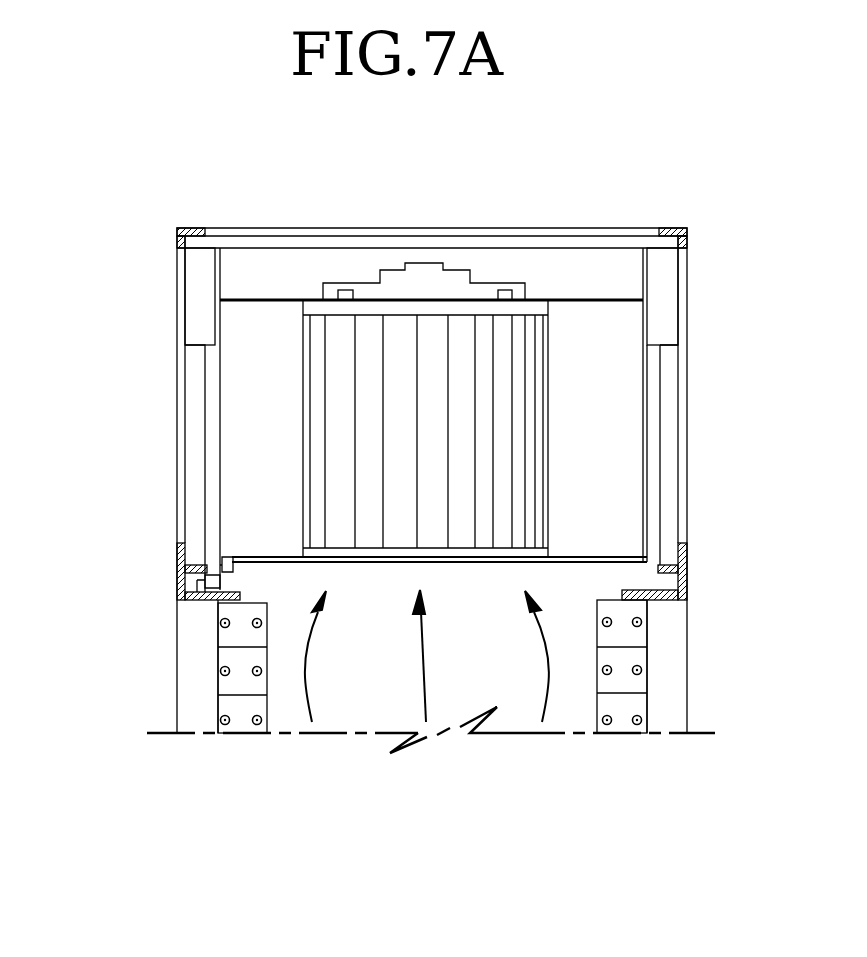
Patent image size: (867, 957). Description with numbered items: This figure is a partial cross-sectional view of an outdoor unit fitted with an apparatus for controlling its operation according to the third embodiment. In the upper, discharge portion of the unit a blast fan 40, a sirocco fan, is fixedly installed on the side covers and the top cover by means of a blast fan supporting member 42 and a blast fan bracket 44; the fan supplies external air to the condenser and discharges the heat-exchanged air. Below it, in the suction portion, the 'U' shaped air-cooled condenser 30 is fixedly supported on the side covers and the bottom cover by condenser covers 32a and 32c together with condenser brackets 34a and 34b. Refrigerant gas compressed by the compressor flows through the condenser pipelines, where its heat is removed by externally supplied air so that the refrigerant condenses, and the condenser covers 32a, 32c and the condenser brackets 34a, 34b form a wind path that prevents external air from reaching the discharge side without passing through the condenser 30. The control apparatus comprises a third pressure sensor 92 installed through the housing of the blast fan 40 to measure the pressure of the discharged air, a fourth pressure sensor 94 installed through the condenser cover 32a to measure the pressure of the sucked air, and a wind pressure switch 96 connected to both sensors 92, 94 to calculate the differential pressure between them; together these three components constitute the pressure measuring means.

The air-cooled condenser 30 is at (240, 723).
The condenser cover 32a is at (178, 575).
The condenser cover 32c is at (690, 580).
The condenser bracket 34a is at (195, 723).
The condenser bracket 34b is at (670, 723).
The blast fan 40 is at (593, 298).
The blast fan supporting member 42 is at (180, 401).
The blast fan bracket 44 is at (193, 268).
The third pressure sensor 92 is at (227, 562).
The fourth pressure sensor 94 is at (197, 606).
The wind pressure switch 96 is at (180, 586).